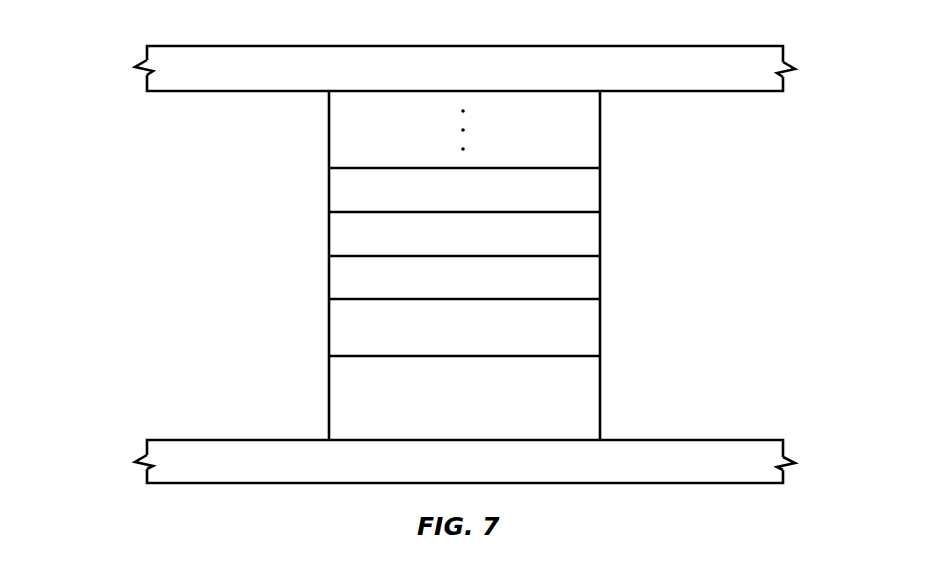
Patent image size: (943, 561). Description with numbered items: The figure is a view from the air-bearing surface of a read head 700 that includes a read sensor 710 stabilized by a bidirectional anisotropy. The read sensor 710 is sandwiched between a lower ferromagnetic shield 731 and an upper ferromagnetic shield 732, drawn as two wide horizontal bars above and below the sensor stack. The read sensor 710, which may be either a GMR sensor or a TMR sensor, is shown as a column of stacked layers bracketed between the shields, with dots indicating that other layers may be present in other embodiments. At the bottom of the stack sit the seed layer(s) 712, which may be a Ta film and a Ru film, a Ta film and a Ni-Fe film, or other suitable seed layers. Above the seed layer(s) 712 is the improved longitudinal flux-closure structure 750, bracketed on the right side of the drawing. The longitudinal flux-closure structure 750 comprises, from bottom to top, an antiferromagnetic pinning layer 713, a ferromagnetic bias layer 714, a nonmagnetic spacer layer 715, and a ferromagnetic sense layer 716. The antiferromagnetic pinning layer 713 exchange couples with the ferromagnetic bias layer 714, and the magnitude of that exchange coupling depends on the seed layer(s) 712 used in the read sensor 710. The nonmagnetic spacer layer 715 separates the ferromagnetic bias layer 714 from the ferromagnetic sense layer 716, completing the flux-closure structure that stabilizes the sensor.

The read head 700 is at (410, 289).
The read sensor 710 is at (364, 265).
The seed layer 712 is at (578, 407).
The antiferromagnetic pinning layer 713 is at (578, 339).
The ferromagnetic bias layer 714 is at (578, 286).
The nonmagnetic spacer layer 715 is at (578, 245).
The ferromagnetic sense layer 716 is at (464, 184).
The longitudinal flux-closure structure 750 is at (516, 256).
The ferromagnetic shield 731 is at (578, 471).
The ferromagnetic shield 732 is at (578, 78).